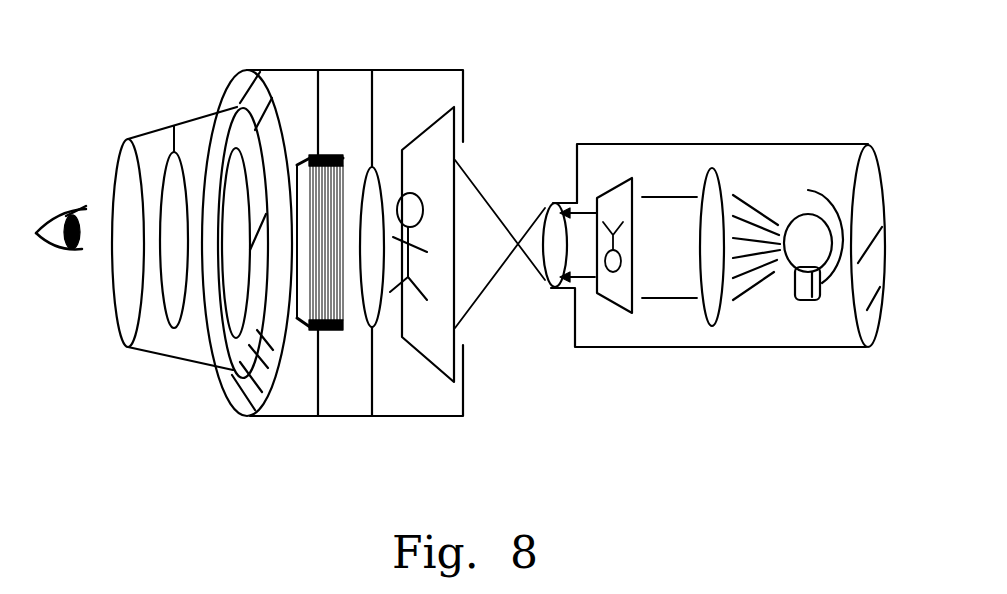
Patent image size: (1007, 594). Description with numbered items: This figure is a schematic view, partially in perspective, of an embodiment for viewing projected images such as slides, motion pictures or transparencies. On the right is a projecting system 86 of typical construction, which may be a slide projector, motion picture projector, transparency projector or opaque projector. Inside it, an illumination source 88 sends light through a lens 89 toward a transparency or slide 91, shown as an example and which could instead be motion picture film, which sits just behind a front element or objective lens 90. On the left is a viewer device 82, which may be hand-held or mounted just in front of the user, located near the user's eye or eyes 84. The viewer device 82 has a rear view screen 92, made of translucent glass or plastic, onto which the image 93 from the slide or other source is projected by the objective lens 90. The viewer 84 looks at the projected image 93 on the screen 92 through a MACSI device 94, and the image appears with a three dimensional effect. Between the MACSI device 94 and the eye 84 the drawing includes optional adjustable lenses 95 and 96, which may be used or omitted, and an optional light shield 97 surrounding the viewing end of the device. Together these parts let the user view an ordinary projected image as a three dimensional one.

The viewer device 82 is at (272, 440).
The eye of the user 84 is at (63, 246).
The projecting system 86 is at (695, 360).
The illumination source 88 is at (820, 300).
The lens 89 is at (714, 175).
The front element or objective lens 90 is at (550, 283).
The transparency or slide 91 is at (632, 306).
The rear view screen 92 is at (455, 334).
The image 93 is at (421, 196).
The MACSI device 94 is at (333, 330).
The adjustable lens 95 is at (161, 318).
The adjustable lens 96 is at (374, 167).
The light shield 97 is at (238, 393).